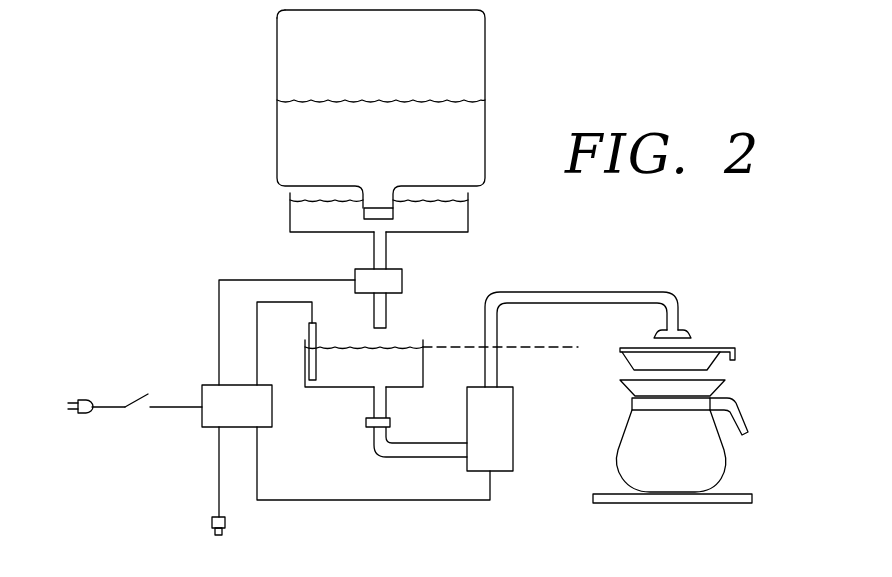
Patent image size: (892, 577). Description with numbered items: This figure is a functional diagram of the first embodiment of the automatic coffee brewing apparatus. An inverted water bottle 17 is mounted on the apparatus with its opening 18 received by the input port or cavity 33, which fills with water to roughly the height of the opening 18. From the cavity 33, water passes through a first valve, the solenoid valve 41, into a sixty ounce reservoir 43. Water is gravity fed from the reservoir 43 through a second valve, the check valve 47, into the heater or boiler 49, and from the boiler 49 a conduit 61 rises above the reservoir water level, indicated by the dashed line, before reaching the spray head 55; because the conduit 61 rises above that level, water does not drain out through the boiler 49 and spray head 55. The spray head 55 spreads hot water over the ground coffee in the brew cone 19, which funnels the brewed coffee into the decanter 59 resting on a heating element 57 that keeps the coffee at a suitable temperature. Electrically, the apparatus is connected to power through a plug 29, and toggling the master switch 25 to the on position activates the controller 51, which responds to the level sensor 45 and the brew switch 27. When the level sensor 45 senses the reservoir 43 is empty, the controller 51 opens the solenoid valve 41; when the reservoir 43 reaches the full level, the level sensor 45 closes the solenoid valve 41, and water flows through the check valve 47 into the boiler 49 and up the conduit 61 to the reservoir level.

The water bottle 17 is at (481, 47).
The opening 18 is at (393, 216).
The input port or cavity 33 is at (292, 222).
The solenoid valve 41 is at (402, 285).
The reservoir 43 is at (412, 362).
The level sensor 45 is at (313, 383).
The check valve 47 is at (366, 422).
The heater or boiler 49 is at (513, 458).
The conduit 61 is at (532, 292).
The spray head 55 is at (685, 333).
The brew cone 19 is at (622, 358).
The decanter 59 is at (617, 462).
The heating element 57 is at (683, 503).
The power plug 29 is at (80, 414).
The master switch 25 is at (141, 398).
The controller 51 is at (202, 418).
The brew switch 27 is at (212, 522).